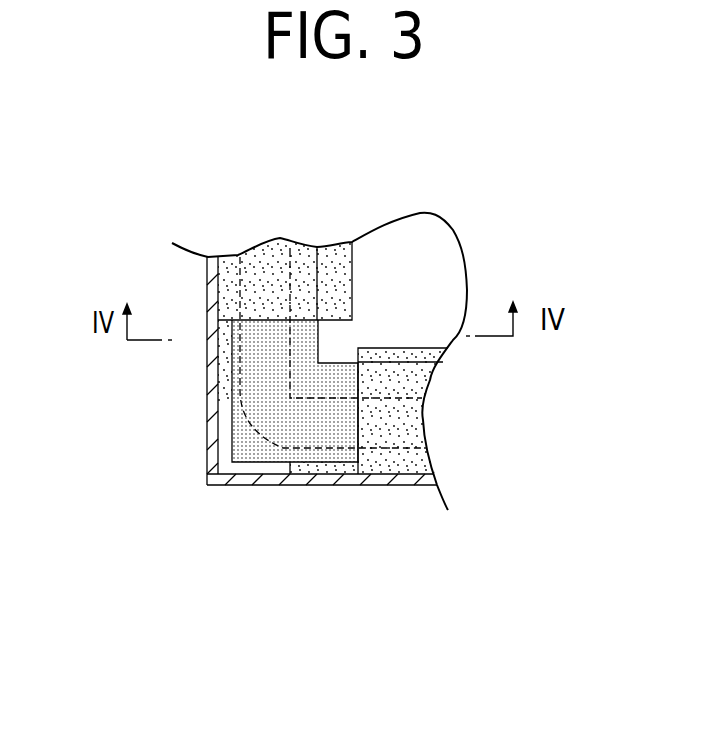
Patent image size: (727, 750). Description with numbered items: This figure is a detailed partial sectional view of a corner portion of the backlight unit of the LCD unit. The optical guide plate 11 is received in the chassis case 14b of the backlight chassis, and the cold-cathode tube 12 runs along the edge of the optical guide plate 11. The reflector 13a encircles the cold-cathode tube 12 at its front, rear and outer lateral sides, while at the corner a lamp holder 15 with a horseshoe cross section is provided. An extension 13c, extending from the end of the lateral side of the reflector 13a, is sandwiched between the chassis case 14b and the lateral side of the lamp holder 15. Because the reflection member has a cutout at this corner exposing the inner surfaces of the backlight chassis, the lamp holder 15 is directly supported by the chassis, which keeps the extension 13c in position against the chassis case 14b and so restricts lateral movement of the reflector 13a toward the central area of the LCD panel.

The optical guide plate 11 is at (390, 300).
The cold-cathode tube 12 is at (400, 485).
The reflector 13a is at (330, 272).
The extension 13c is at (218, 380).
The chassis case 14b is at (207, 283).
The lamp holder 15 is at (240, 440).